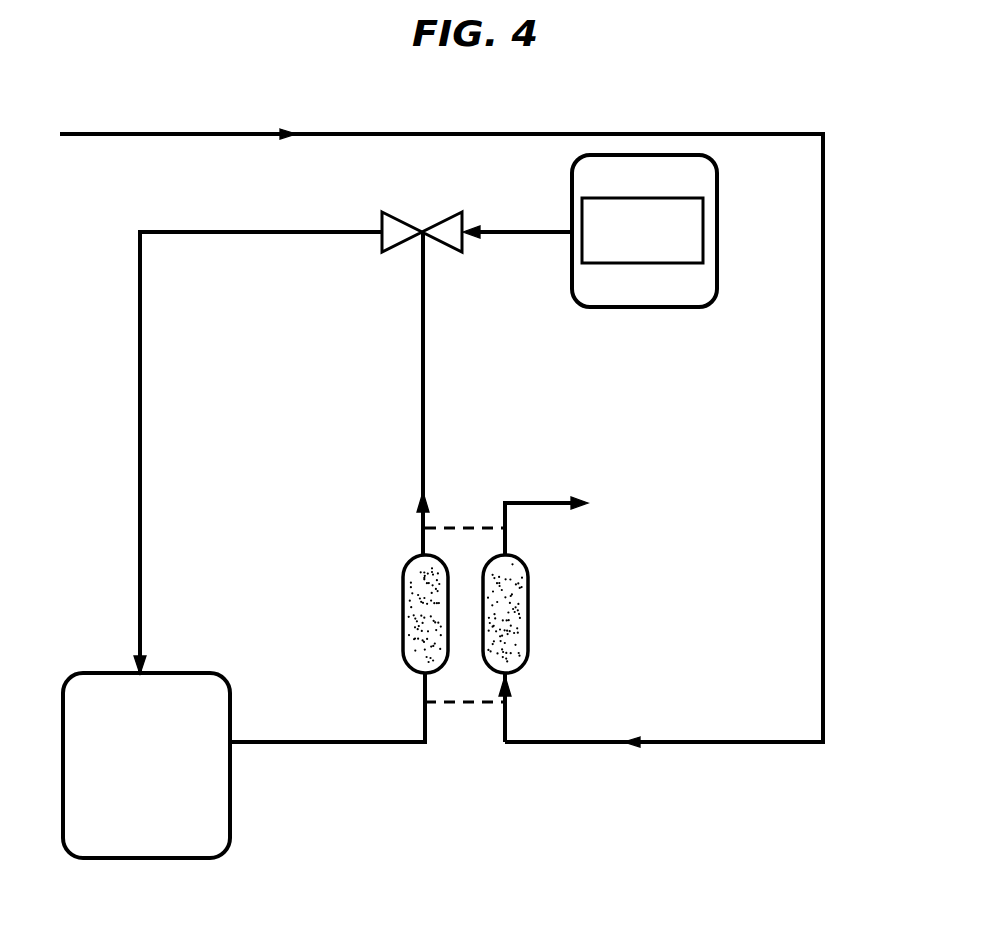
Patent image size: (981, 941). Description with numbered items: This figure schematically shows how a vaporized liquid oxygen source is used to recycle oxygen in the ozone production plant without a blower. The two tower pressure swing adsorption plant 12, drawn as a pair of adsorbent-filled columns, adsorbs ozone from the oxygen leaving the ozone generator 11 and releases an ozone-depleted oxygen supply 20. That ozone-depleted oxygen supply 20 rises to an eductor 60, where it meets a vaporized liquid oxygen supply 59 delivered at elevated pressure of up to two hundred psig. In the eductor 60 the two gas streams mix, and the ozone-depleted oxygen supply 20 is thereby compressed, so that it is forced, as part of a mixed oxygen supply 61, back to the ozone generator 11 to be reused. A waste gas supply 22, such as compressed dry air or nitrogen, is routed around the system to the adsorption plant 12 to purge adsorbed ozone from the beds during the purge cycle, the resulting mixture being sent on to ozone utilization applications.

The ozone generator 11 is at (230, 810).
The two tower pressure swing adsorption plant 12 is at (556, 612).
The ozone-depleted oxygen supply 20 is at (421, 390).
The waste gas supply 22 is at (825, 560).
The vaporized liquid oxygen supply 59 is at (640, 308).
The eductor 60 is at (400, 218).
The mixed oxygen supply 61 is at (143, 430).